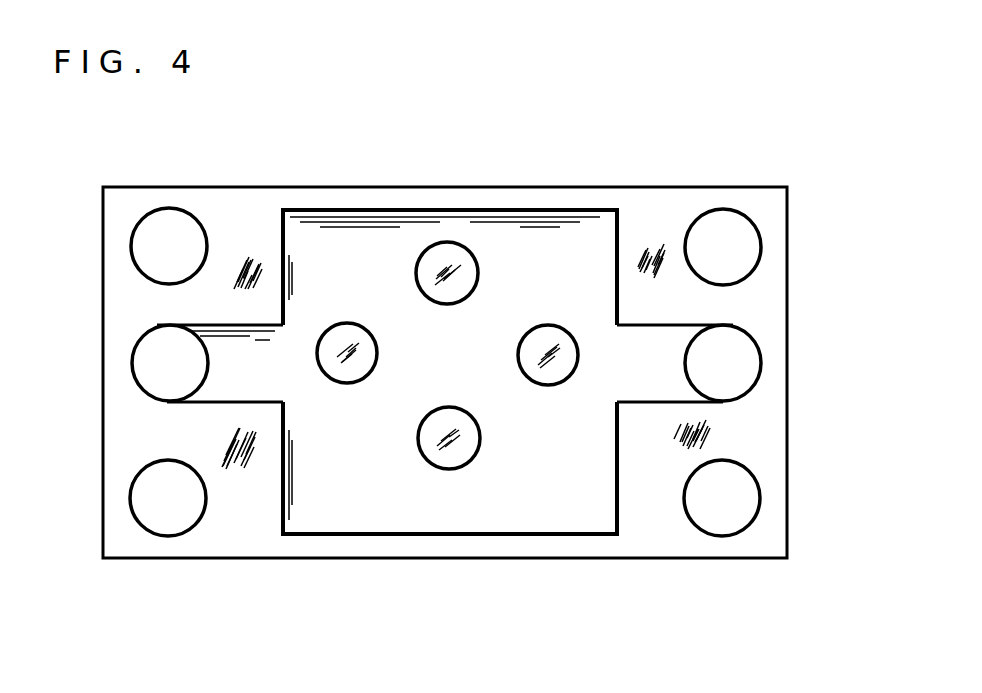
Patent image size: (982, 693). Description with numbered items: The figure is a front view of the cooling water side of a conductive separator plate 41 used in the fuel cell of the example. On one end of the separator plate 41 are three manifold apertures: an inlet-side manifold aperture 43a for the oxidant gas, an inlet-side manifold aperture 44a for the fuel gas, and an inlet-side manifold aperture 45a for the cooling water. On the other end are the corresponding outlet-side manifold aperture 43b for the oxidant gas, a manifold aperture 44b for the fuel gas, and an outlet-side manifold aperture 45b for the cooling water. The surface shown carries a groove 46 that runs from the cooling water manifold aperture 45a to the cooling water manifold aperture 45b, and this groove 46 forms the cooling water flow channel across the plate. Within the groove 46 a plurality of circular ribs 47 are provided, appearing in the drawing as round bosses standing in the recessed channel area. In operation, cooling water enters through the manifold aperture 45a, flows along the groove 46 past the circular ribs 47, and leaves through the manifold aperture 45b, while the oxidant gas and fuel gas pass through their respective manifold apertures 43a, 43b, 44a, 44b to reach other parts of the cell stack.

The conductive separator plate 41 is at (312, 183).
The inlet-side manifold aperture for the oxidant gas 43a is at (171, 244).
The outlet-side manifold aperture for the oxidant gas 43b is at (721, 244).
The inlet-side manifold aperture for the fuel gas 44a is at (166, 512).
The manifold aperture for the fuel gas 44b is at (721, 512).
The inlet-side manifold aperture for the cooling water 45a is at (165, 364).
The outlet-side manifold aperture for the cooling water 45b is at (722, 370).
The groove 46 is at (373, 516).
The circular ribs 47 is at (452, 271).